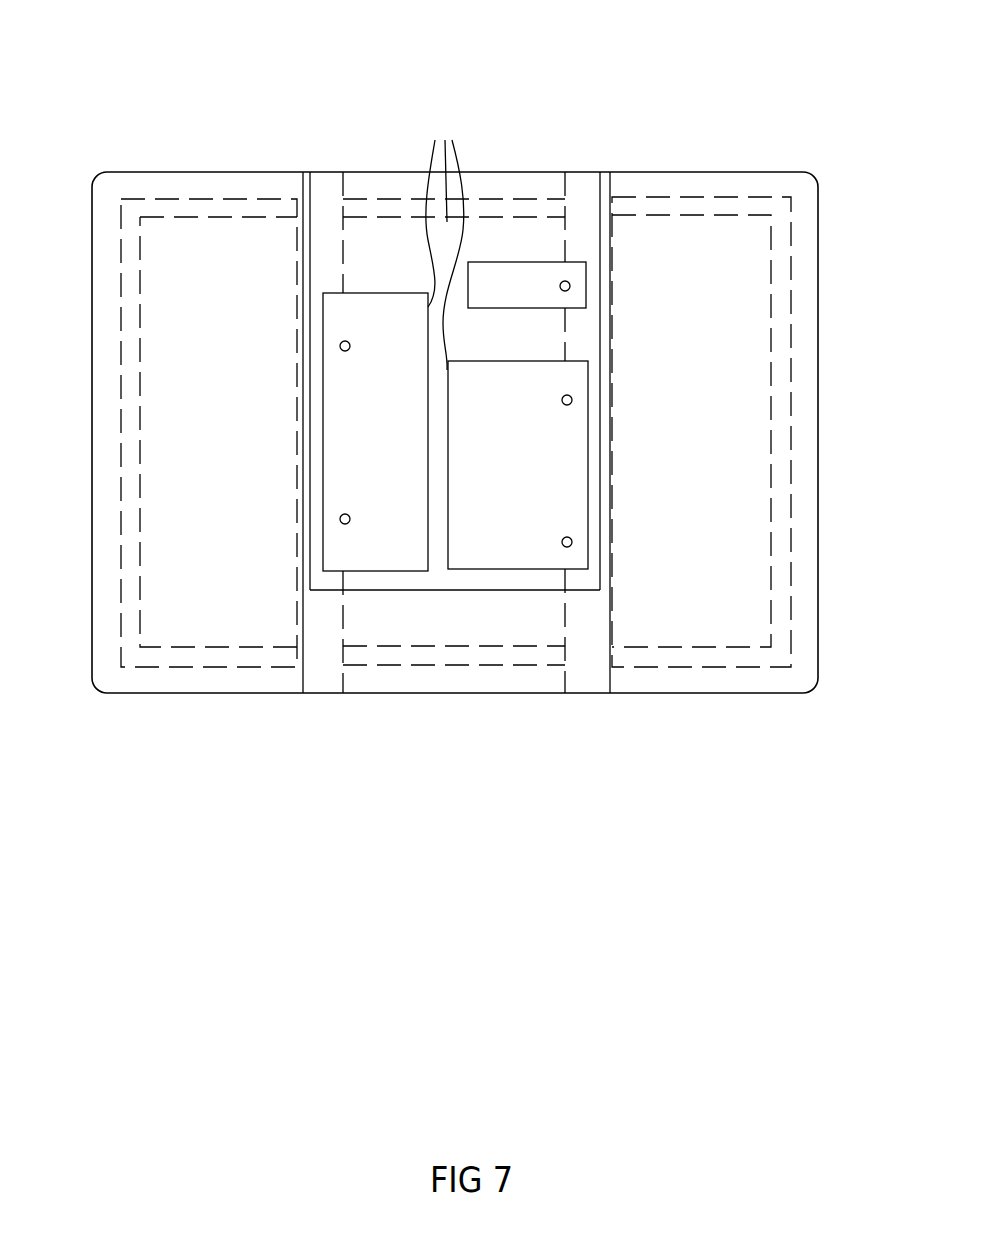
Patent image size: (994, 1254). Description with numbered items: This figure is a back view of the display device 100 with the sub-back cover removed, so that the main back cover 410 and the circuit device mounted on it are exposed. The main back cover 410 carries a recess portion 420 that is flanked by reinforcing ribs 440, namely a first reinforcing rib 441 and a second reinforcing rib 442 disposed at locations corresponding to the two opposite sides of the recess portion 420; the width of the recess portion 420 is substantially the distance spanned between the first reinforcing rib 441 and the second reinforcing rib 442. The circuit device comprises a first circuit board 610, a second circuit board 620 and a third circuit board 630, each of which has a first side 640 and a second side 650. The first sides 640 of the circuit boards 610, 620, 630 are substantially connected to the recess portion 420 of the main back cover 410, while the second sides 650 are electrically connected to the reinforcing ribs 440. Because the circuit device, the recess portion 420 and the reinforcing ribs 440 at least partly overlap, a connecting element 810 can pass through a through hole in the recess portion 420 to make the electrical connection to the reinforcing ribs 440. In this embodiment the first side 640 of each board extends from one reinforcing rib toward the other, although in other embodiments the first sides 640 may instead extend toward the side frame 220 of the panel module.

The display device 100 is at (805, 21).
The side frame 220 is at (127, 240).
The main back cover 410 is at (177, 183).
The recess portion 420 is at (462, 580).
The reinforcing ribs 440 is at (493, 32).
The first reinforcing rib 441 is at (588, 205).
The second reinforcing rib 442 is at (318, 208).
The first circuit board 610 is at (503, 548).
The second circuit board 620 is at (327, 529).
The third circuit board 630 is at (578, 286).
The first side 640 is at (445, 243).
The second side 650 is at (506, 431).
The connecting element 810 is at (340, 520).